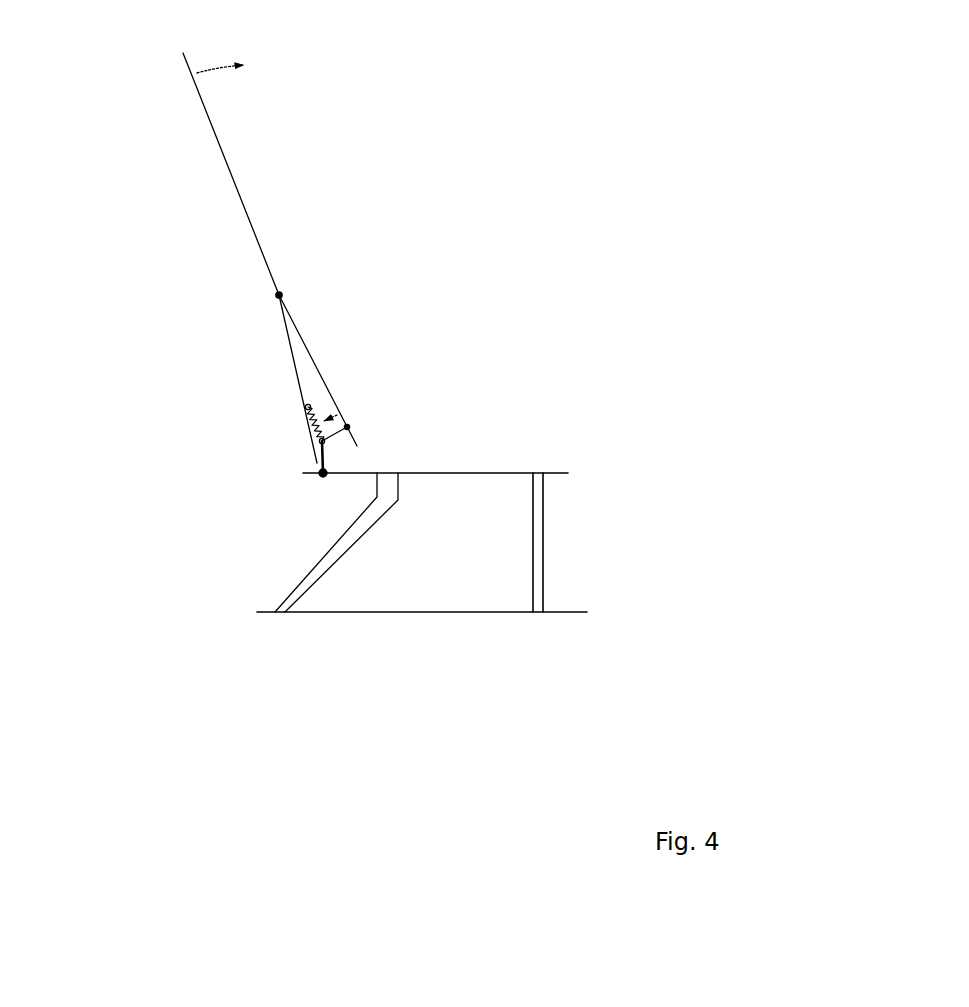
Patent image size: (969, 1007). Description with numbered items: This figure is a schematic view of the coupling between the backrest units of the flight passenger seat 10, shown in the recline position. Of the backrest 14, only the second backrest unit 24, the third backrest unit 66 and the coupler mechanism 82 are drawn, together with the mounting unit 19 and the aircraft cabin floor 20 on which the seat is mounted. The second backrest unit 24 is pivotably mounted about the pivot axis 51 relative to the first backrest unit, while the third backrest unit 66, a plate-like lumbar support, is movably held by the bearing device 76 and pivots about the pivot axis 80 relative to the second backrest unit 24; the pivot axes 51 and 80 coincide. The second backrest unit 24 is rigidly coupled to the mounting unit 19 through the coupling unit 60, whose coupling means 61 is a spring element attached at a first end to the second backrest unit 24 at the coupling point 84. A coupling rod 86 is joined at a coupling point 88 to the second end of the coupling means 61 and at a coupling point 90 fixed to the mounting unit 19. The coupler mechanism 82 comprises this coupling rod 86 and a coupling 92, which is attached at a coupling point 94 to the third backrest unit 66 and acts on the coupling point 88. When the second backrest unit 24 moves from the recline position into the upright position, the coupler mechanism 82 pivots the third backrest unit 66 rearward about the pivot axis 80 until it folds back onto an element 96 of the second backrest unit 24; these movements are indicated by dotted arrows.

The flight passenger seat 10 is at (513, 126).
The backrest 14 is at (177, 122).
The second backrest unit 24 is at (207, 106).
The pivot axis 51 is at (279, 295).
The bearing device 76 is at (299, 278).
The pivot axis 80 is at (279, 295).
The element 96 is at (290, 337).
The third backrest unit 66 is at (318, 372).
The coupling point 94 is at (347, 427).
The coupler mechanism 82 is at (330, 434).
The coupling 92 is at (368, 427).
The coupling means 61 is at (316, 423).
The coupling point 84 is at (306, 407).
The coupling unit 60 is at (317, 447).
The coupling point 88 is at (301, 442).
The coupling rod 86 is at (320, 458).
The coupling point 90 is at (303, 474).
The mounting unit 19 is at (537, 508).
The aircraft cabin floor 20 is at (560, 611).